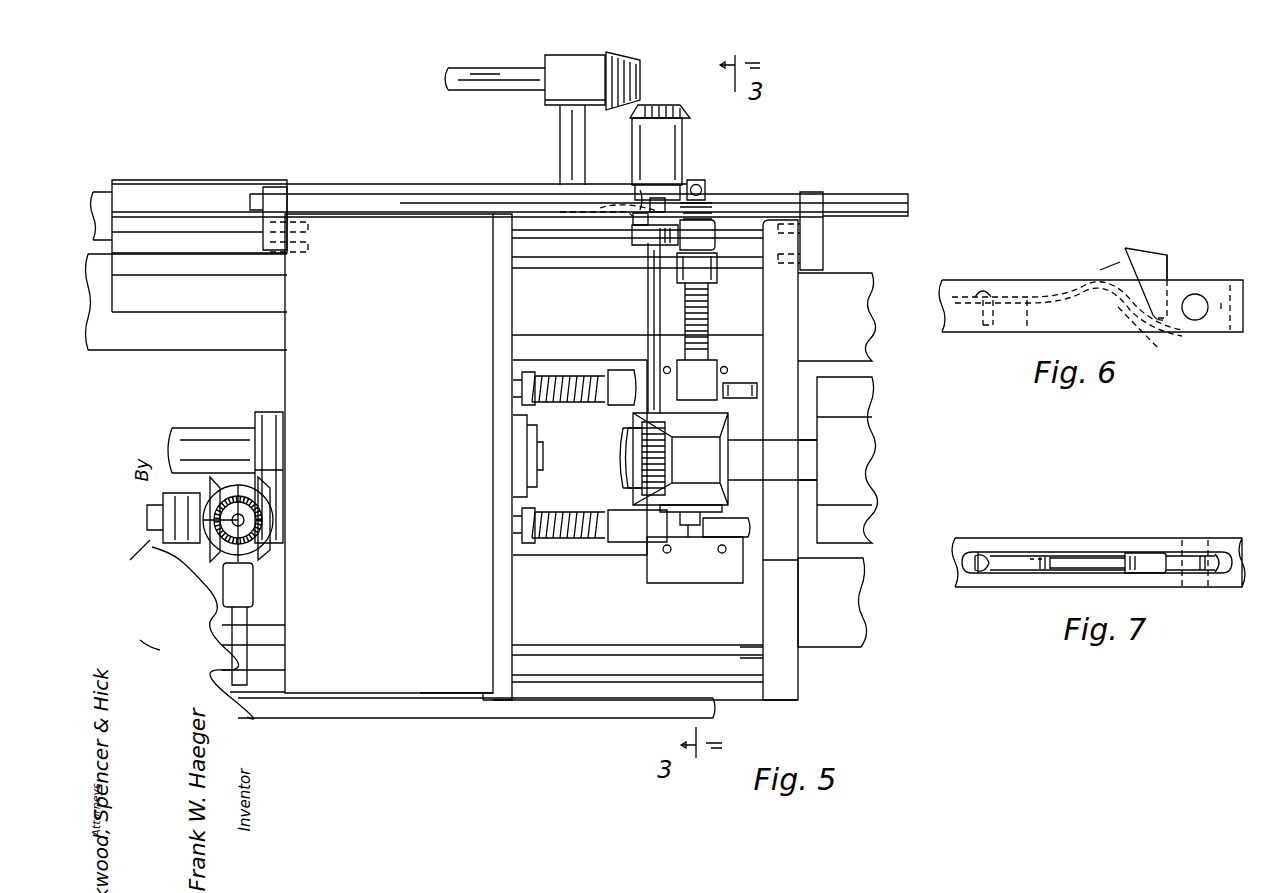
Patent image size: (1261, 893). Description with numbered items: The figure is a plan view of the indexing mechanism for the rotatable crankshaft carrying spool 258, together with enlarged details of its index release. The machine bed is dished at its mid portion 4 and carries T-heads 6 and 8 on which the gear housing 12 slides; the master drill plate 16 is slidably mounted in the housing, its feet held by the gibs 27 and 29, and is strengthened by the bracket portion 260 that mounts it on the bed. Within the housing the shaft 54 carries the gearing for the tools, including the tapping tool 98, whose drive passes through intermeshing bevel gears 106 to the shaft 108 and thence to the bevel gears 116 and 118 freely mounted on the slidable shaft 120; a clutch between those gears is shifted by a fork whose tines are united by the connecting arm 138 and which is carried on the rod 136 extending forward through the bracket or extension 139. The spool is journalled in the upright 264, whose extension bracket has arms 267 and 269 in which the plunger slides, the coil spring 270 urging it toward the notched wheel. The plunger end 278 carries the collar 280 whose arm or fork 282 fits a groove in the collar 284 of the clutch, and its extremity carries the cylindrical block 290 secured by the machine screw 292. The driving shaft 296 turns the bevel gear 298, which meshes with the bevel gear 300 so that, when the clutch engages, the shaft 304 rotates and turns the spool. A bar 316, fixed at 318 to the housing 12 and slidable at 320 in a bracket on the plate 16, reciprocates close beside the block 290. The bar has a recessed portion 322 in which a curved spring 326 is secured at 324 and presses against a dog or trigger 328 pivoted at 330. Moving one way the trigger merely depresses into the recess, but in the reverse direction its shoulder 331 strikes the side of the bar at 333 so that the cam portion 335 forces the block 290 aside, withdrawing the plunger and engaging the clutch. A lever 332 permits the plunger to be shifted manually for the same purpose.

In FIG. 5, the dished mid portion of the bed 4 is at (848, 546).
In FIG. 5, the T-head 6 is at (855, 587).
In FIG. 5, the T-head 8 is at (845, 282).
In FIG. 5, the gear housing 12 is at (345, 215).
In FIG. 5, the master drill plate 16 is at (785, 602).
In FIG. 5, the gib 27 is at (198, 196).
In FIG. 5, the gib 29 is at (542, 258).
In FIG. 5, the shaft 54 is at (190, 436).
In FIG. 5, the tapping tool 98 is at (745, 530).
In FIG. 5, the intermeshing bevel gears 106 is at (272, 505).
In FIG. 5, the shaft 108 is at (242, 525).
In FIG. 5, the bevel gear 116 is at (214, 480).
In FIG. 5, the bevel gear 118 is at (284, 550).
In FIG. 5, the shaft 120 is at (153, 528).
In FIG. 5, the rod 136 is at (253, 616).
In FIG. 5, the connecting arm 138 is at (255, 490).
In FIG. 5, the bracket or extension 139 is at (290, 275).
In FIG. 5, the crankshaft carrying spool 258 is at (865, 393).
In FIG. 5, the bracket portion or extension 260 is at (510, 226).
In FIG. 5, the upright 264 is at (712, 474).
In FIG. 5, the arm 267 is at (712, 400).
In FIG. 5, the arm 269 is at (717, 280).
In FIG. 5, the coil spring 270 is at (708, 326).
In FIG. 5, the plunger end 278 is at (705, 215).
In FIG. 5, the collar 280 is at (715, 244).
In FIG. 5, the arm or fork 282 is at (638, 230).
In FIG. 5, the collar 284 is at (648, 248).
In FIG. 5, the cylindrical block 290 is at (702, 180).
In FIG. 5, the machine screw 292 is at (708, 202).
In FIG. 5, the driving shaft 296 is at (490, 80).
In FIG. 5, the bevel gear 298 is at (640, 72).
In FIG. 5, the bevel gear 300 is at (682, 108).
In FIG. 5, the shaft 304 is at (648, 318).
In FIG. 5, the bar 316 is at (878, 205).
In FIG. 6, the bar 316 is at (950, 288).
In FIG. 7, the bar 316 is at (968, 578).
In FIG. 5, the rigid mounting 318 is at (277, 195).
In FIG. 5, the slidable mounting 320 is at (812, 205).
In FIG. 5, the recessed portion 322 is at (615, 214).
In FIG. 6, the recessed portion 322 is at (1118, 307).
In FIG. 7, the recessed portion 322 is at (1012, 556).
In FIG. 6, the spring securing point 324 is at (982, 296).
In FIG. 7, the spring securing point 324 is at (982, 557).
In FIG. 5, the curved spring 326 is at (612, 208).
In FIG. 6, the curved spring 326 is at (1045, 296).
In FIG. 7, the curved spring 326 is at (1072, 558).
In FIG. 5, the dog or trigger 328 is at (646, 200).
In FIG. 6, the dog or trigger 328 is at (1142, 255).
In FIG. 7, the dog or trigger 328 is at (1150, 556).
In FIG. 6, the pivot 330 is at (1208, 315).
In FIG. 7, the pivot 330 is at (1200, 580).
In FIG. 6, the shoulder 331 is at (1169, 264).
In FIG. 5, the lever 332 is at (696, 540).
In FIG. 6, the side of the bar 333 is at (1240, 283).
In FIG. 7, the side of the bar 333 is at (1230, 544).
In FIG. 6, the cam portion 335 is at (1128, 266).